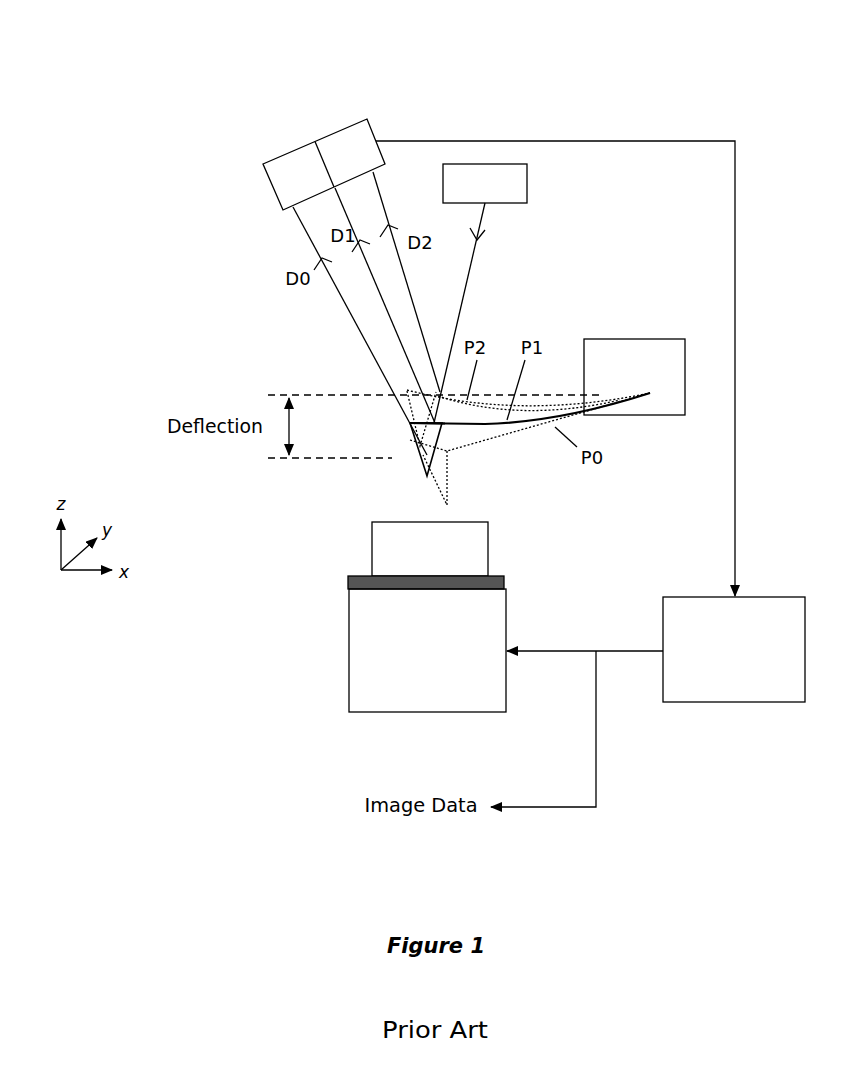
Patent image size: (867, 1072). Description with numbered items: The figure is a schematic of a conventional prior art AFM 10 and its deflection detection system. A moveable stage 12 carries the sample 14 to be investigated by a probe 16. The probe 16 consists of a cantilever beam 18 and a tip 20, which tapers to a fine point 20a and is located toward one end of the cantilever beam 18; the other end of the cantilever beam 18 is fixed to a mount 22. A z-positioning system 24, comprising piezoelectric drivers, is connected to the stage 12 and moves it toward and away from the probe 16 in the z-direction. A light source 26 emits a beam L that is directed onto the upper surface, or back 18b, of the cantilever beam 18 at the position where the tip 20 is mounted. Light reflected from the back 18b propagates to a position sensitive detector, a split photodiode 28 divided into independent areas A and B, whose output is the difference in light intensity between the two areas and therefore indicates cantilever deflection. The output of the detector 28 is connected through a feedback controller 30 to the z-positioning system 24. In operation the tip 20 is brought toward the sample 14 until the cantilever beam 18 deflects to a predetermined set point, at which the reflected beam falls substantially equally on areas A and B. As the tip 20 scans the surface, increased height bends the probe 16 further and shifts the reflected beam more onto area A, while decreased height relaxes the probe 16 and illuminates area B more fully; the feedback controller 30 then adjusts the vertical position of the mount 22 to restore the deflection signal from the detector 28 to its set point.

The AFM 10 is at (132, 63).
The moveable stage 12 is at (348, 582).
The sample 14 is at (372, 550).
The probe 16 is at (463, 449).
The cantilever beam 18 is at (492, 438).
The upper surface (back) of the cantilever beam 18b is at (413, 435).
The tip 20 is at (435, 476).
The fine point 20a is at (447, 503).
The mount 22 is at (642, 339).
The z-positioning system 24 is at (348, 697).
The light source 26 is at (527, 182).
The split photodiode 28 is at (315, 141).
The feedback controller 30 is at (735, 702).